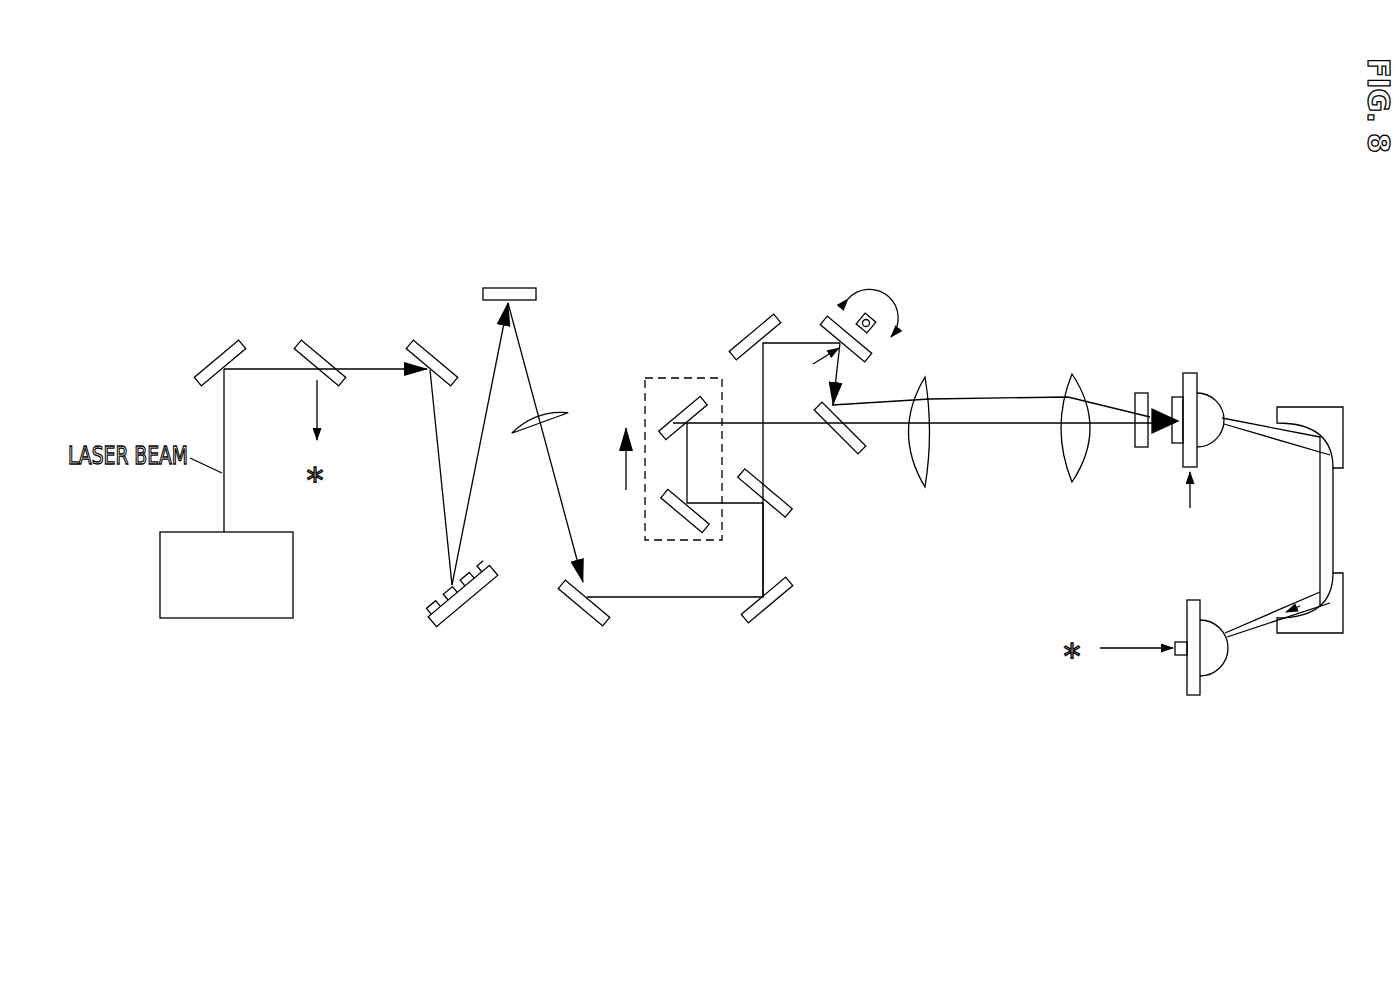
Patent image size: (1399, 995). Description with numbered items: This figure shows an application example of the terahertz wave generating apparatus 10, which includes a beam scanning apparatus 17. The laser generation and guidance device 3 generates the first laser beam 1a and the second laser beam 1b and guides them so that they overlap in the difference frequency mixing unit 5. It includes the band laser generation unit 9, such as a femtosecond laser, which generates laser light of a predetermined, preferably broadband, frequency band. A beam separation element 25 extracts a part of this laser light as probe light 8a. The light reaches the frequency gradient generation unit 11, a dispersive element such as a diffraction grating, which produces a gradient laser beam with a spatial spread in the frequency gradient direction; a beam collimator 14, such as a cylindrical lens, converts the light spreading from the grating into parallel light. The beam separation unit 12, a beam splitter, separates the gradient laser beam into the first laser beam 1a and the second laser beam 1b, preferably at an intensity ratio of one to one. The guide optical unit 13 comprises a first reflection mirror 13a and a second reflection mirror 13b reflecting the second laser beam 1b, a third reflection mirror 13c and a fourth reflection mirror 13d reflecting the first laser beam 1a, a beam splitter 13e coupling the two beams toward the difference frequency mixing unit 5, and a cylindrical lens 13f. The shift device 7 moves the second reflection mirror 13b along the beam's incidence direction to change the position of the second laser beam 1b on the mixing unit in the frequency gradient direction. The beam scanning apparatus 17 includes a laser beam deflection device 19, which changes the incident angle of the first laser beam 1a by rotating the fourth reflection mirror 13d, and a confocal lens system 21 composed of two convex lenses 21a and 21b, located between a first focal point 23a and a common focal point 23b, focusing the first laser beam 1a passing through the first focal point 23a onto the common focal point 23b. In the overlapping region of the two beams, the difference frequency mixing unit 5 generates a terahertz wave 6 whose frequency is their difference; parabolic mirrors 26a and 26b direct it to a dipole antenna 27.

The terahertz wave generating apparatus 10 is at (276, 234).
The beam separation element 25 is at (313, 352).
The probe light 8a is at (1108, 647).
The band laser generation unit 9 is at (239, 592).
The frequency gradient generation unit 11 is at (466, 604).
The laser generation and guidance device 3 is at (495, 237).
The beam collimator 14 is at (542, 418).
The guide optical unit 13 is at (621, 297).
The shift device 7 is at (659, 439).
The first laser beam 1a is at (762, 386).
The second laser beam 1b is at (737, 506).
The first reflection mirror 13a is at (672, 502).
The second reflection mirror 13b is at (676, 423).
The third reflection mirror 13c is at (757, 330).
The fourth reflection mirror 13d is at (840, 325).
The beam splitter 13e is at (853, 450).
The cylindrical lens 13f is at (1140, 398).
The laser beam deflection device 19 is at (868, 316).
The beam scanning apparatus 17 is at (995, 271).
The beam separation unit 12 is at (787, 518).
The first focal point 23a is at (804, 369).
The common focal point 23b is at (1192, 509).
The confocal lens system 21 is at (1000, 499).
The convex lens 21a is at (925, 463).
The convex lens 21b is at (1075, 450).
The difference frequency mixing unit 5 is at (1203, 398).
The terahertz wave 6 is at (1306, 440).
The parabolic mirror 26a is at (1315, 405).
The parabolic mirror 26b is at (1318, 627).
The dipole antenna 27 is at (1205, 657).